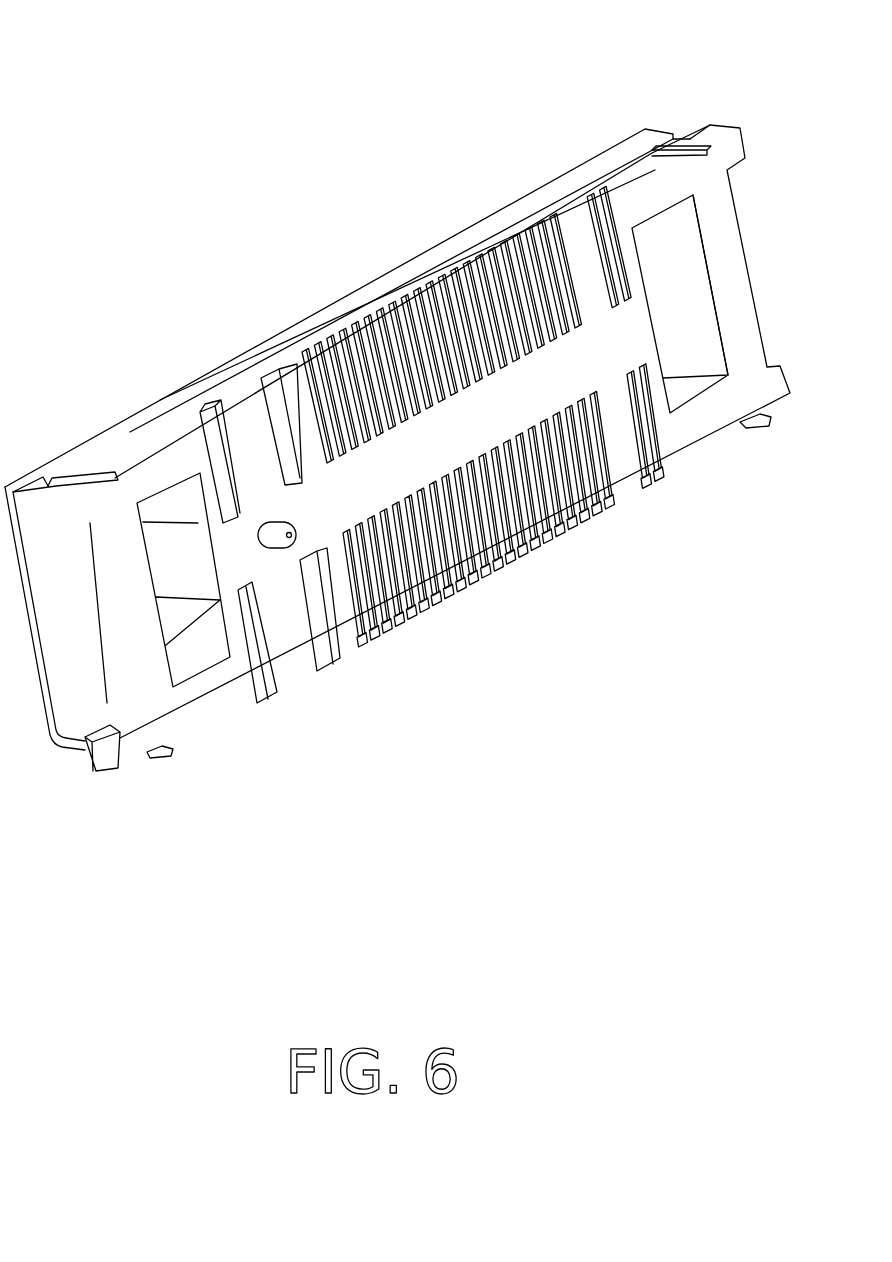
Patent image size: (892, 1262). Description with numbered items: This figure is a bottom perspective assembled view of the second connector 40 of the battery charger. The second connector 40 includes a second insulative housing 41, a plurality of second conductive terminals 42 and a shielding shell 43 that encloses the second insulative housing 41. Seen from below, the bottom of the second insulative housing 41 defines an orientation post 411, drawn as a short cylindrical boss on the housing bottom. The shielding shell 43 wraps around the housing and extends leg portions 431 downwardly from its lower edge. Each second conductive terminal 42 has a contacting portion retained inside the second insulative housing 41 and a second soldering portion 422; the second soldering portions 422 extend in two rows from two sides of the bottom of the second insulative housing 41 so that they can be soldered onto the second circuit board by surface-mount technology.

The second connector 40 is at (220, 44).
The second insulative housing 41 is at (573, 222).
The orientation post 411 is at (278, 548).
The second conductive terminals 42 is at (380, 308).
The second soldering portion 422 is at (612, 507).
The shielding shell 43 is at (358, 464).
The leg portions 431 is at (170, 753).